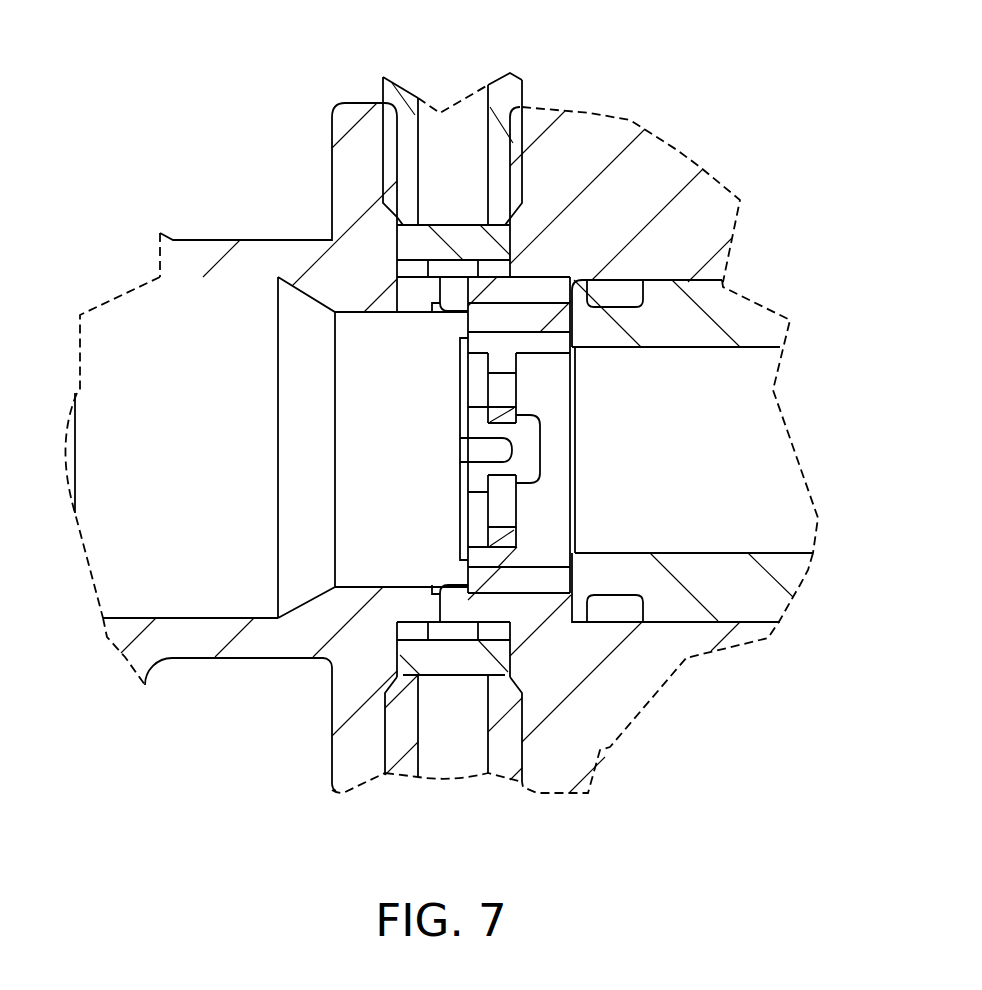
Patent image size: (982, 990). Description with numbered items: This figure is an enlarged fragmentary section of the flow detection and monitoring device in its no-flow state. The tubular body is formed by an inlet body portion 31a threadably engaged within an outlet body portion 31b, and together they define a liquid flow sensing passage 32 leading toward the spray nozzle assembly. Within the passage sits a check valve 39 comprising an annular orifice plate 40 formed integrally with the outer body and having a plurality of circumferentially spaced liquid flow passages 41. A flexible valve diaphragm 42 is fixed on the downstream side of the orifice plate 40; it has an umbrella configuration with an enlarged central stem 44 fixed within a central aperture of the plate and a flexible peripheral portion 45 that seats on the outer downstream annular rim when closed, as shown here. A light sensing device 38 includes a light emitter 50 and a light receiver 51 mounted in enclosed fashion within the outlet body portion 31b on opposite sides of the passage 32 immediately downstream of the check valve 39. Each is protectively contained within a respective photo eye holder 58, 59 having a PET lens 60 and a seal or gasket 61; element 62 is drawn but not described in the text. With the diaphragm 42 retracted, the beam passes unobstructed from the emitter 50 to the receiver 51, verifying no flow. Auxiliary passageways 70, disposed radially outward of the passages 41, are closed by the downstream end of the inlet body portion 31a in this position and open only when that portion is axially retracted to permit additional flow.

The inlet body portion 31a is at (753, 600).
The outlet body portion 31b is at (213, 635).
The liquid flow sensing passage 32 is at (778, 551).
The light sensing device 38 is at (530, 93).
The check valve 39 is at (505, 549).
The orifice plate 40 is at (517, 413).
The liquid flow passages 41 is at (507, 393).
The valve diaphragm 42 is at (460, 392).
The central stem 44 is at (542, 450).
The flexible peripheral portion 45 is at (460, 354).
The light emitter 50 is at (458, 187).
The light receiver 51 is at (470, 730).
The photo eye holder 58 is at (396, 91).
The photo eye holder 59 is at (407, 747).
The PET lens 60 is at (413, 236).
The seal or gasket 61 is at (420, 268).
The lower block 62 is at (425, 658).
The auxiliary passageways 70 is at (548, 297).